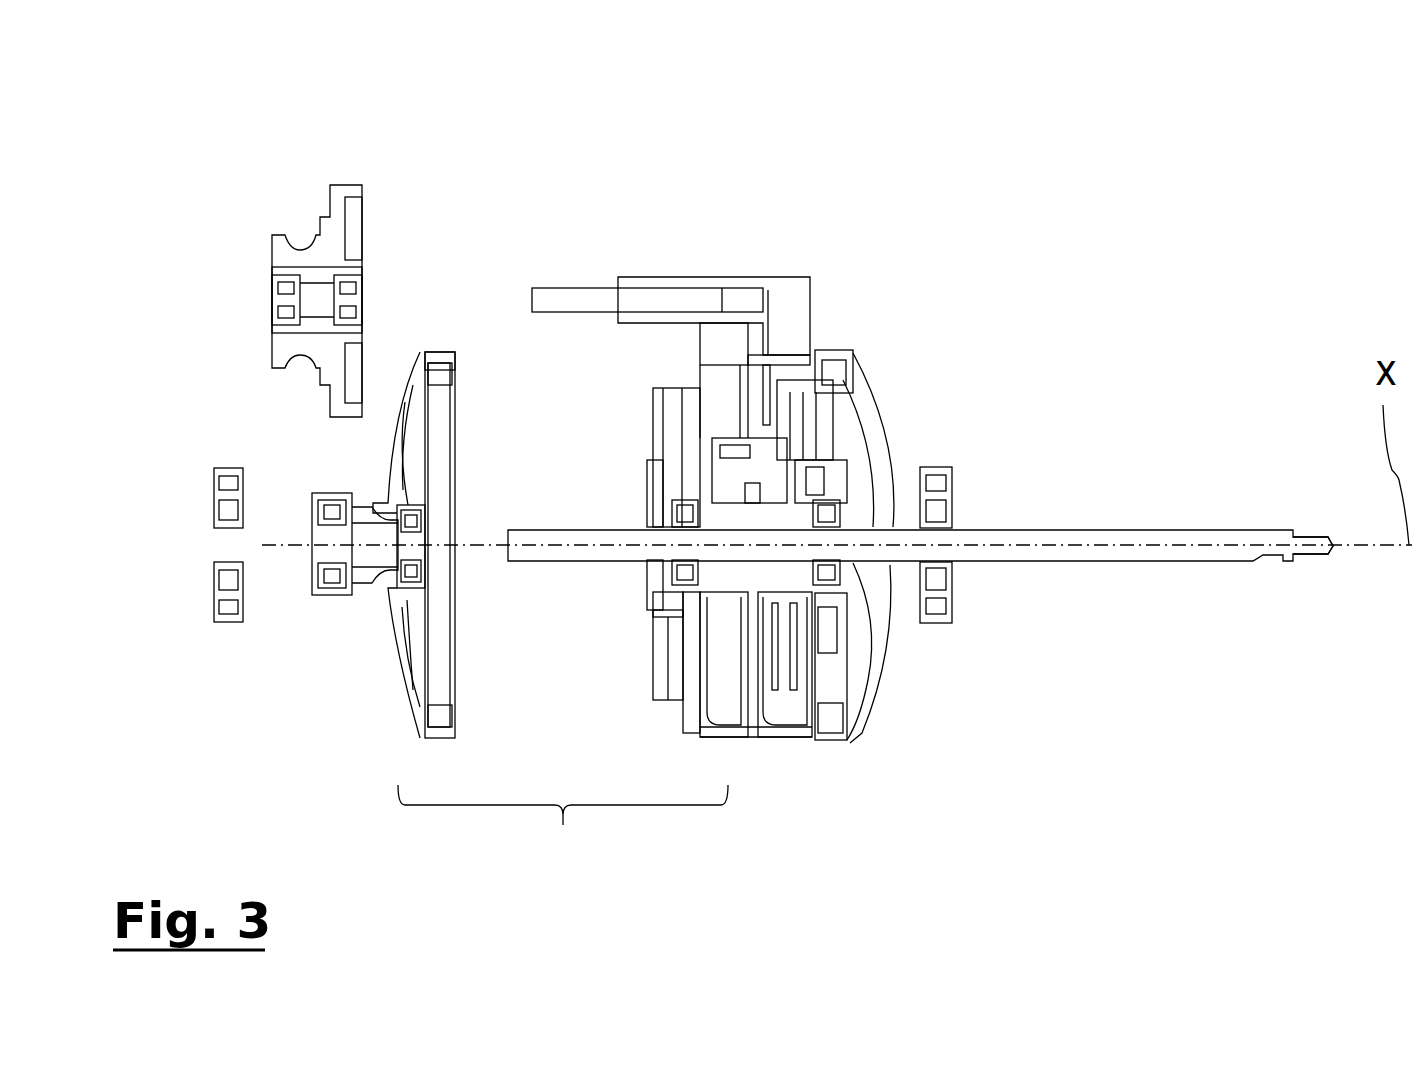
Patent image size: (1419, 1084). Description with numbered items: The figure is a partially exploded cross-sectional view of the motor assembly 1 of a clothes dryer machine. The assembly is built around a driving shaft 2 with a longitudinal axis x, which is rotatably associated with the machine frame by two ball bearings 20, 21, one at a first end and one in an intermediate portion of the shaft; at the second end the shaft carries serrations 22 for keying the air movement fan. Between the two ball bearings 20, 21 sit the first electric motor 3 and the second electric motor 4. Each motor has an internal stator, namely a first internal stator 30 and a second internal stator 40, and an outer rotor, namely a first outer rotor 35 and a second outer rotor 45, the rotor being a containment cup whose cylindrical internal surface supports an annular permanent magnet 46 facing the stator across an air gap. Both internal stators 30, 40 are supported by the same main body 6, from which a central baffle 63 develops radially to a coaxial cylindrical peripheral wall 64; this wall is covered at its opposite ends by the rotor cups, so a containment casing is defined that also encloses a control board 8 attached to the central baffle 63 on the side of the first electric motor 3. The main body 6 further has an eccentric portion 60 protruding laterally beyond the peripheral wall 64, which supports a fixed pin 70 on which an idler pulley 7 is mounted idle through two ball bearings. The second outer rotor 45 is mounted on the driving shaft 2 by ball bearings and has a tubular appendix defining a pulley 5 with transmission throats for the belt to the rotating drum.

The motor assembly 1 is at (746, 445).
The driving shaft 2 is at (1045, 545).
The first electric motor 3 is at (839, 326).
The second electric motor 4 is at (563, 835).
The pulley 5 is at (368, 552).
The main body 6 is at (752, 620).
The idler pulley 7 is at (308, 243).
The control board 8 is at (785, 422).
The ball bearing 20 is at (228, 512).
The ball bearing 21 is at (933, 587).
The serrations 22 is at (1282, 555).
The first internal stator 30 is at (848, 430).
The first outer rotor 35 is at (848, 353).
The second internal stator 40 is at (677, 650).
The second outer rotor 45 is at (412, 713).
The annular permanent magnet 46 is at (437, 353).
The eccentric portion 60 is at (760, 278).
The central baffle 63 is at (755, 667).
The cylindrical peripheral wall 64 is at (762, 733).
The fixed pin 70 is at (600, 288).